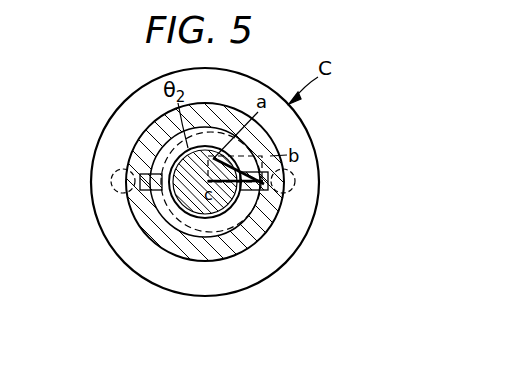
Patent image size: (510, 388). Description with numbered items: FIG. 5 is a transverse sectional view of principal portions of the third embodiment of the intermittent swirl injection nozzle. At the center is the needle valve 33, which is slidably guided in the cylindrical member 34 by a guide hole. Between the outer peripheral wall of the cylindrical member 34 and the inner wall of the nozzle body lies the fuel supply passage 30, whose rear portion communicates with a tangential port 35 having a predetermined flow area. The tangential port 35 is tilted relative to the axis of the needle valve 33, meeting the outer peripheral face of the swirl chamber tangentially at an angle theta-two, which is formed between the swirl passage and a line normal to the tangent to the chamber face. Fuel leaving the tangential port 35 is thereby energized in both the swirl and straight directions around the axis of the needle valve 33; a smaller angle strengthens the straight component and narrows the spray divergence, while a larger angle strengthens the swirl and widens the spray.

The fuel supply passage 30 is at (150, 186).
The needle valve 33 is at (199, 214).
The cylindrical member 34 is at (264, 231).
The tangential port 35 is at (148, 174).